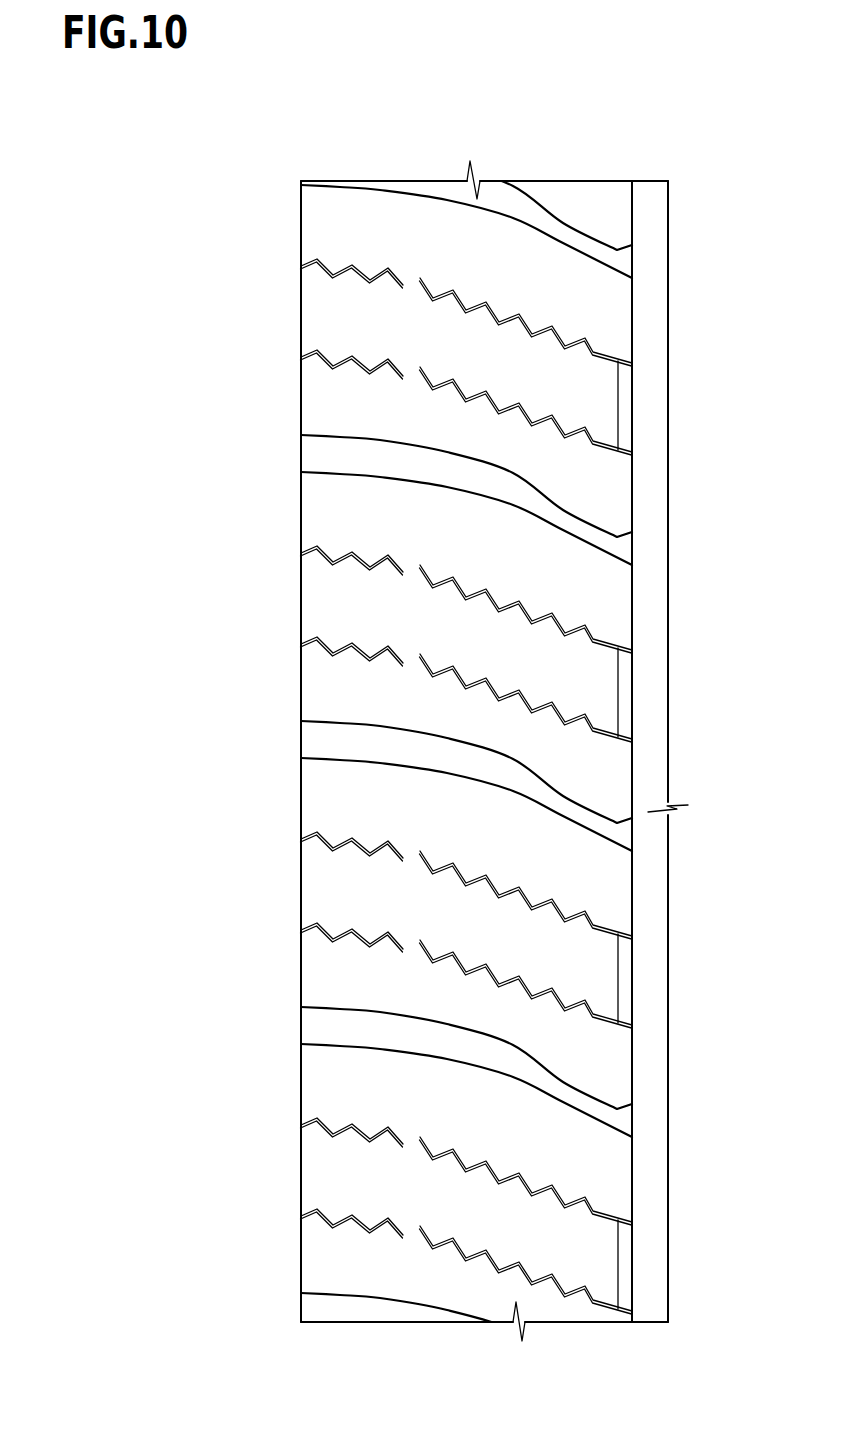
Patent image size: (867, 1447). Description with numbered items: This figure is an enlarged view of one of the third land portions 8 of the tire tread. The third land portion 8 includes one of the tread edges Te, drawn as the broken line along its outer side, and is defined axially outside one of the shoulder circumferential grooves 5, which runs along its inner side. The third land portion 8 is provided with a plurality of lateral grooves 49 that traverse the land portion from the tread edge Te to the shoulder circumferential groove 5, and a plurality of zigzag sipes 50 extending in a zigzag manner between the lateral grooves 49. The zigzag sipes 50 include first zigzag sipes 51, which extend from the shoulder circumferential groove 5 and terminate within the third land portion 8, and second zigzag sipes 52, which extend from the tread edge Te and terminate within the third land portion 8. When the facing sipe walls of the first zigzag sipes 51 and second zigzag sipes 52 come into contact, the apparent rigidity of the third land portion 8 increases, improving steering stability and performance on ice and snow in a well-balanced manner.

The tread edge Te is at (300, 218).
The third land portion 8 is at (444, 251).
The shoulder circumferential groove 5 is at (650, 232).
The lateral groove 49 is at (493, 492).
The zigzag sipe 50 is at (217, 300).
The first zigzag sipe 51 is at (490, 313).
The second zigzag sipe 52 is at (357, 269).